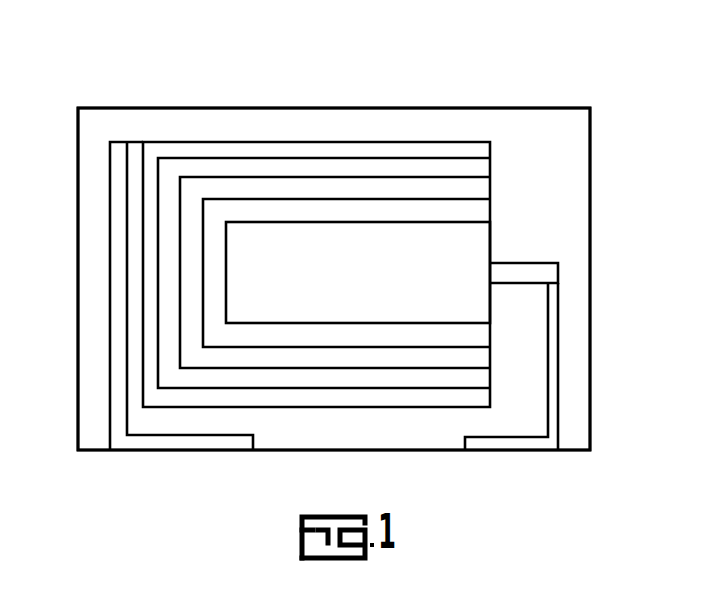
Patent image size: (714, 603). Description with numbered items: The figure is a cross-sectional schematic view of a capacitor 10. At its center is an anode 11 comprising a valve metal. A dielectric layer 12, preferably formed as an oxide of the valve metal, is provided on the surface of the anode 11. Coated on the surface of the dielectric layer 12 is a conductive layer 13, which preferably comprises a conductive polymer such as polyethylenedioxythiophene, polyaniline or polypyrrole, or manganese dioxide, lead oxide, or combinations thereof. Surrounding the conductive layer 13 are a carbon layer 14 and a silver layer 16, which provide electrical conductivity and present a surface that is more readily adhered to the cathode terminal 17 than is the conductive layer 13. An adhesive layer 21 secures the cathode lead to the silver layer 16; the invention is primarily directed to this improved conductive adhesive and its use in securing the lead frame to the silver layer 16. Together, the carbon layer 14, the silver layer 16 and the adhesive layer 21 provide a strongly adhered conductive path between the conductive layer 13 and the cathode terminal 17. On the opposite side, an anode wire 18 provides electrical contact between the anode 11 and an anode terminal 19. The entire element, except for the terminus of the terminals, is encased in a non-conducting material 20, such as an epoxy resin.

The capacitor 10 is at (465, 82).
The anode 11 is at (368, 282).
The dielectric layer 12 is at (491, 210).
The conductive layer 13 is at (491, 189).
The carbon layer 14 is at (491, 164).
The silver layer 16 is at (491, 146).
The cathode terminal 17 is at (115, 318).
The anode wire 18 is at (540, 275).
The anode terminal 19 is at (560, 327).
The non-conducting material 20 is at (173, 122).
The adhesive layer 21 is at (135, 244).